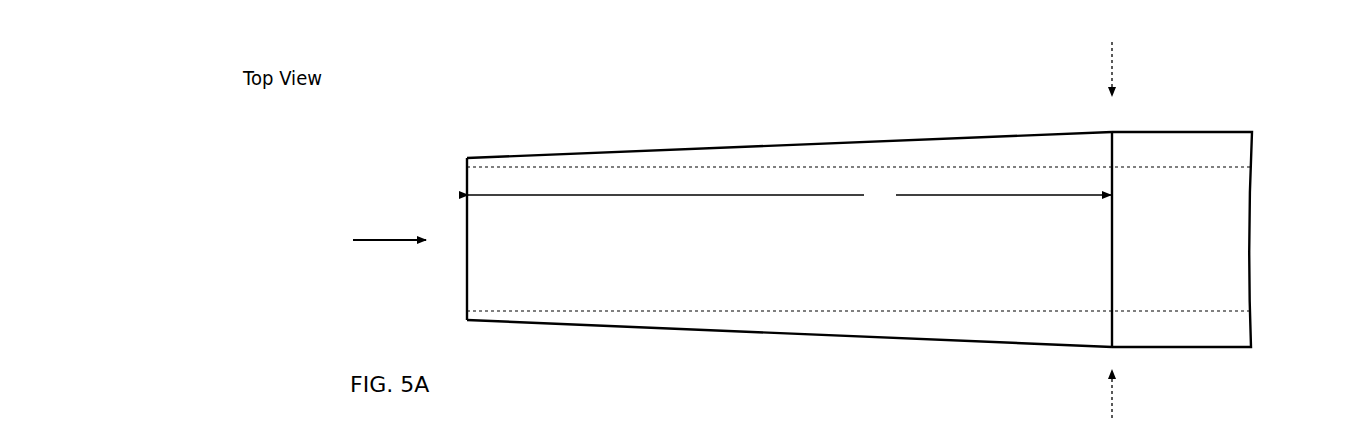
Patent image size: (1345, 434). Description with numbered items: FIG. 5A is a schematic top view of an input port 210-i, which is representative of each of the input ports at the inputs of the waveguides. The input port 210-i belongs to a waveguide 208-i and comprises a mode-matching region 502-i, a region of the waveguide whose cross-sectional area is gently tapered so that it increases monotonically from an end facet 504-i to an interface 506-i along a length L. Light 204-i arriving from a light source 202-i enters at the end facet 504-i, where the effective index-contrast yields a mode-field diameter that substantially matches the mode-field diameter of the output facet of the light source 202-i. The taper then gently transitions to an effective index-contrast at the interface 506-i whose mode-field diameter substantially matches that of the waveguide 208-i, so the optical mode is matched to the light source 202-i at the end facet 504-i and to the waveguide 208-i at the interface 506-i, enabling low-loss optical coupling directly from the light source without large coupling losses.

The input port 210-i is at (417, 51).
The mode-matching region 502-i is at (1112, 122).
The end facet 504-i is at (419, 202).
The interface 506-i is at (1113, 240).
The waveguide 208-i is at (1229, 213).
The light source 202-i is at (299, 204).
The light emitted from light source 204-i is at (392, 244).